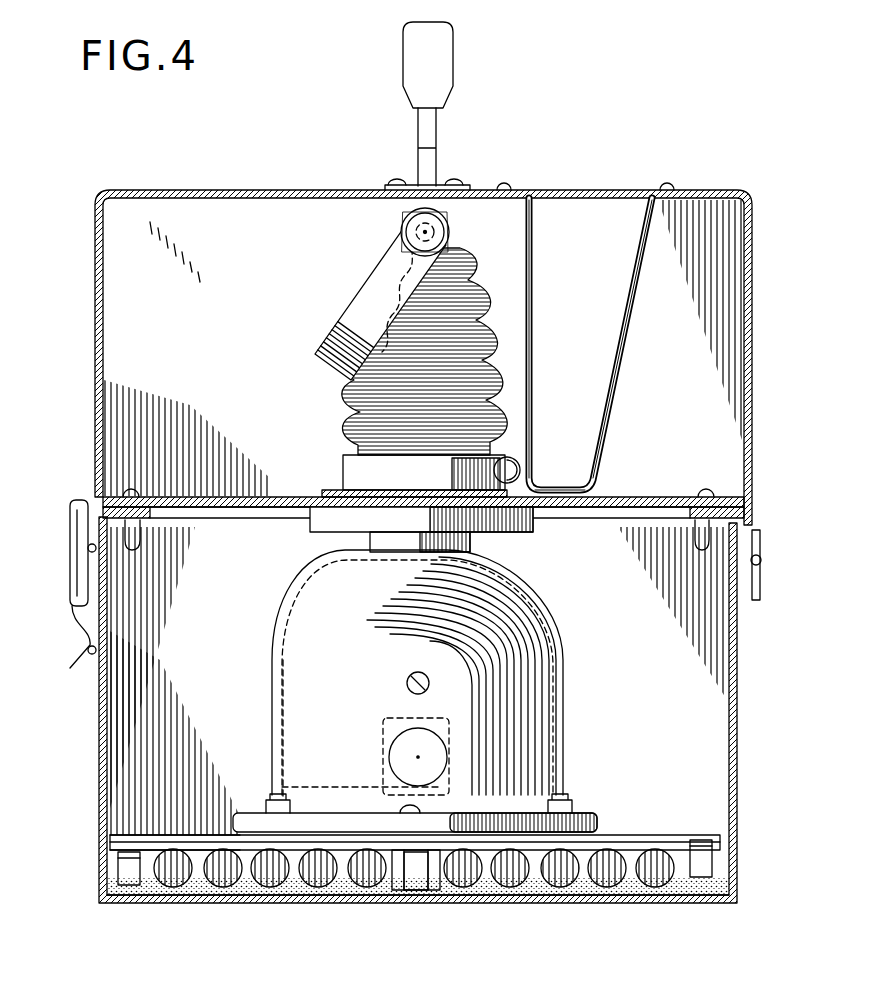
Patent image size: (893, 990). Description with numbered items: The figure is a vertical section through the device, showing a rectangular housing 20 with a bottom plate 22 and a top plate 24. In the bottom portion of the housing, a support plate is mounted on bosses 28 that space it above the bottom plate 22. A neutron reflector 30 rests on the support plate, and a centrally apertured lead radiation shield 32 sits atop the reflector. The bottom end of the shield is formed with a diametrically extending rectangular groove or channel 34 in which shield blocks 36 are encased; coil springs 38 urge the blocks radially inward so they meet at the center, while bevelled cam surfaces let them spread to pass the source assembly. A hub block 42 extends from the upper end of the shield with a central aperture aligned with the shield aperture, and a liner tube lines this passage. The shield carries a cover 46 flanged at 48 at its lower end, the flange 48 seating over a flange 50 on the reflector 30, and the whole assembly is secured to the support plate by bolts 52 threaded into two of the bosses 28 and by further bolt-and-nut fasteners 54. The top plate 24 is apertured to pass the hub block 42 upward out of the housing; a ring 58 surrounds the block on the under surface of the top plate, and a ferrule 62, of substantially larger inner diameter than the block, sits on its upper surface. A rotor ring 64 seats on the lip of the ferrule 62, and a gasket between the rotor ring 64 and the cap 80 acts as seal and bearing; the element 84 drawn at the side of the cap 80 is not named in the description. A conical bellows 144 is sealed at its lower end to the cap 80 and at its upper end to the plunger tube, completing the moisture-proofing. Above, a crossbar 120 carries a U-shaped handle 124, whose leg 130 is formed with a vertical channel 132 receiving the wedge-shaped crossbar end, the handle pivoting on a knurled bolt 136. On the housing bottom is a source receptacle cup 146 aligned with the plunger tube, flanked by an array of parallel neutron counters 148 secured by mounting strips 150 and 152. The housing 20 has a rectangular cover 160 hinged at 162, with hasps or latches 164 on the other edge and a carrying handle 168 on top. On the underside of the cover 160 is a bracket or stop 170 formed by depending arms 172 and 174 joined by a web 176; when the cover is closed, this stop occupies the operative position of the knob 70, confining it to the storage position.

The housing 20 is at (742, 720).
The bottom plate 22 is at (380, 896).
The top plate 24 is at (640, 500).
The bosses 28 is at (118, 862).
The neutron reflector 30 is at (290, 783).
The lead radiation shield 32 is at (292, 652).
The rectangular groove or channel 34 is at (383, 718).
The shield blocks 36 is at (383, 718).
The coil springs 38 is at (389, 742).
The hub block 42 is at (473, 546).
The cover 46 is at (333, 603).
The flange 48 is at (576, 815).
The flange 50 is at (600, 840).
The bolts 52 is at (410, 808).
The bolt-and-nut fasteners 54 is at (275, 800).
The ring 58 is at (534, 528).
The ferrule 62 is at (325, 500).
The rotor ring 64 is at (505, 491).
The knob 70 is at (505, 457).
The cap 80 is at (343, 462).
The bushing 84 is at (458, 468).
The crossbar 120 is at (450, 232).
The U-shaped handle 124 is at (330, 360).
The leg 130 is at (350, 305).
The vertical channel 132 is at (400, 243).
The knurled bolt 136 is at (402, 232).
The bellows 144 is at (352, 400).
The source receptacle cup 146 is at (432, 858).
The neutron counters 148 is at (272, 887).
The mounting strip 150 is at (205, 808).
The mounting strip 152 is at (490, 886).
The cover 160 is at (190, 190).
The hinge 162 is at (752, 568).
The hasps or latches 164 is at (70, 580).
The carrying handle 168 is at (445, 84).
The bracket or stop 170 is at (617, 372).
The depending arm 172 is at (534, 275).
The depending arm 174 is at (636, 305).
The web 176 is at (555, 478).